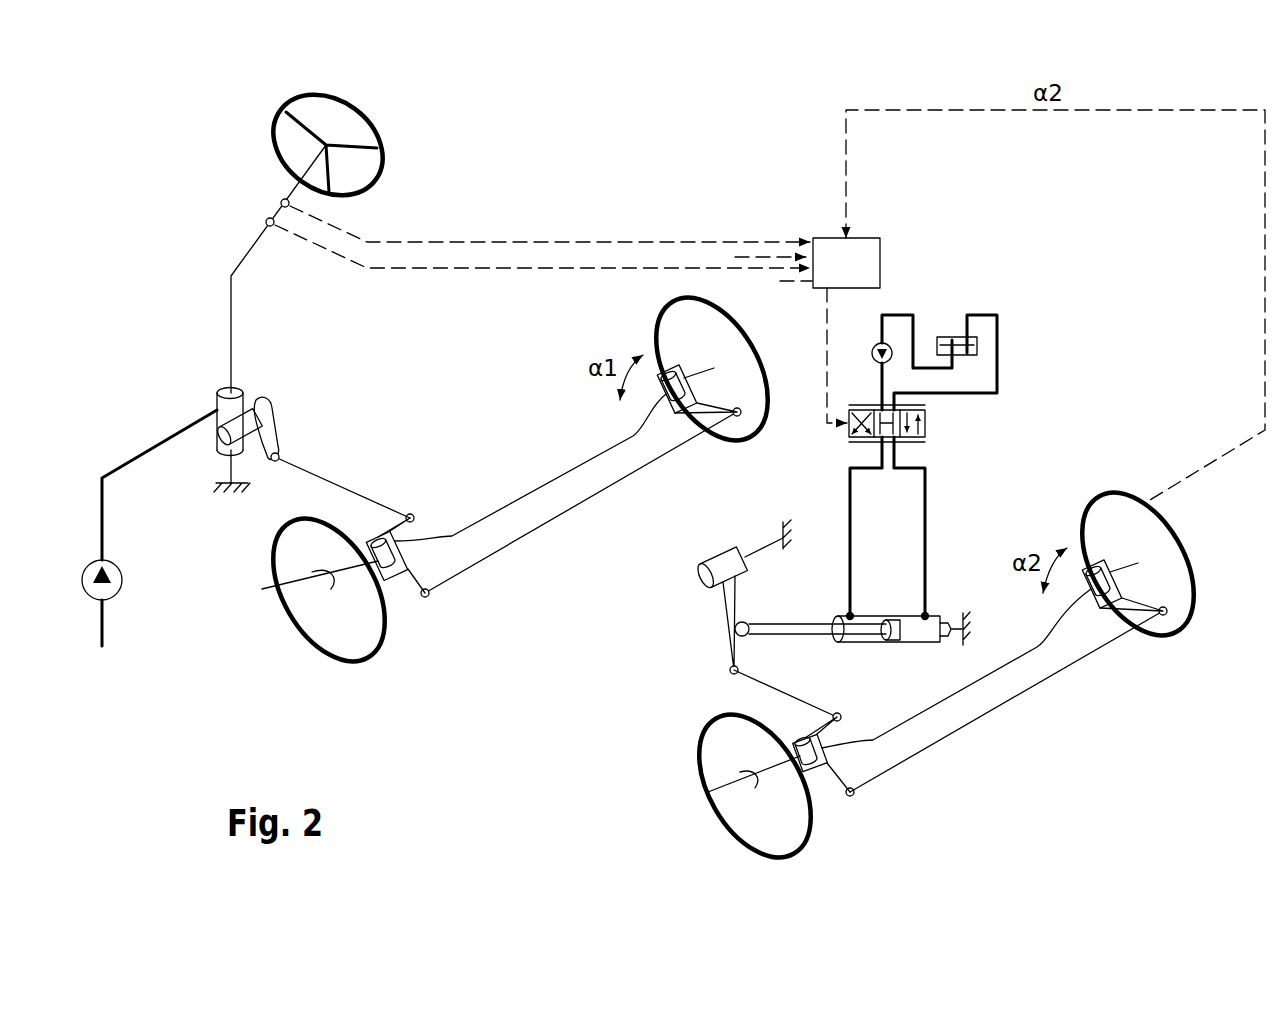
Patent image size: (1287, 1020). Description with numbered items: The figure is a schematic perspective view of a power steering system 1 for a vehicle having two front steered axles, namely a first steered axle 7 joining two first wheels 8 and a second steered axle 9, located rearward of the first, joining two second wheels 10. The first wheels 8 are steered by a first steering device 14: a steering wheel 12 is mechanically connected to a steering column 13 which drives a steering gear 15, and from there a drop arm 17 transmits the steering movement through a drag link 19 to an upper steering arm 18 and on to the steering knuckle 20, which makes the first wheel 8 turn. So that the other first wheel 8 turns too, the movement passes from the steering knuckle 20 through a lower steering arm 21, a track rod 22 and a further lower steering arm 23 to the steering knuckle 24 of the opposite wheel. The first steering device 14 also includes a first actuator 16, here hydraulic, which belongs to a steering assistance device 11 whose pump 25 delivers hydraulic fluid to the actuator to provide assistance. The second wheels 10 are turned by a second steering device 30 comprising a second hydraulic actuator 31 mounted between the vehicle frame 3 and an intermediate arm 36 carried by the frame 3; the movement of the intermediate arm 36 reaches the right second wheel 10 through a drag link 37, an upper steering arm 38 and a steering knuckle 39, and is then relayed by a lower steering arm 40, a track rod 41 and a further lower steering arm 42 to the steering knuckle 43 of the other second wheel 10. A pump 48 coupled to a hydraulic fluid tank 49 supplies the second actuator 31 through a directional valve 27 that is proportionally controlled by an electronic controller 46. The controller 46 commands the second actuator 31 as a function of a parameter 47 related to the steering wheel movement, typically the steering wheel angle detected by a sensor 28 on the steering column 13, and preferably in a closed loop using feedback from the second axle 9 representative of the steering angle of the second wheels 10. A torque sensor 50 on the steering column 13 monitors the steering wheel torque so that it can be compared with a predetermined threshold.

The power steering system 1 is at (489, 752).
The frame 3 is at (214, 494).
The first steered axle 7 is at (540, 488).
The first wheels 8 is at (317, 648).
The second steered axle 9 is at (1044, 647).
The second wheels 10 is at (725, 831).
The steering assistance device 11 is at (92, 540).
The steering wheel 12 is at (383, 176).
The steering column 13 is at (258, 238).
The first steering device 14 is at (278, 460).
The steering gear 15 is at (129, 528).
The first actuator 16 is at (250, 378).
The drop arm 17 is at (272, 436).
The upper steering arm 18 is at (398, 532).
The drag link 19 is at (338, 478).
The steering knuckle 20 is at (266, 589).
The lower steering arm 21 is at (403, 598).
The track rod 22 is at (540, 528).
The further lower steering arm 23 is at (740, 409).
The steering knuckle 24 is at (712, 368).
The pump 25 is at (124, 590).
The directional valve 27 is at (928, 428).
The sensor 28 is at (280, 200).
The second steering device 30 is at (715, 638).
The second actuator 31 is at (884, 596).
The intermediate arm 36 is at (724, 608).
The drag link 37 is at (763, 690).
The upper steering arm 38 is at (814, 733).
The steering knuckle 39 is at (708, 792).
The lower steering arm 40 is at (830, 796).
The track rod 41 is at (948, 737).
The further lower steering arm 42 is at (1168, 605).
The steering knuckle 43 is at (1138, 567).
The controller 46 is at (846, 263).
The parameter 47 is at (530, 242).
The pump 48 is at (872, 352).
The hydraulic fluid tank 49 is at (968, 363).
The torque sensor 50 is at (274, 228).